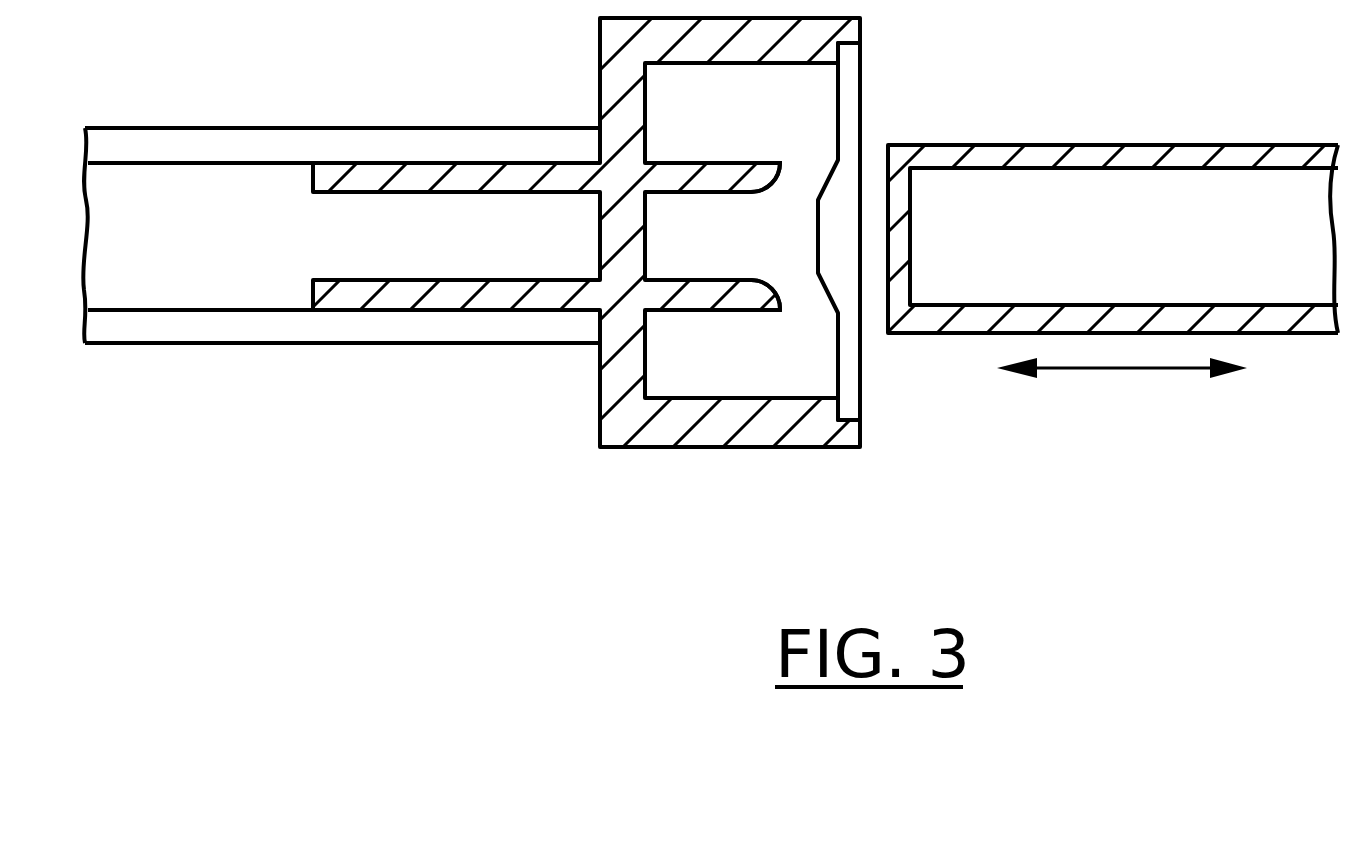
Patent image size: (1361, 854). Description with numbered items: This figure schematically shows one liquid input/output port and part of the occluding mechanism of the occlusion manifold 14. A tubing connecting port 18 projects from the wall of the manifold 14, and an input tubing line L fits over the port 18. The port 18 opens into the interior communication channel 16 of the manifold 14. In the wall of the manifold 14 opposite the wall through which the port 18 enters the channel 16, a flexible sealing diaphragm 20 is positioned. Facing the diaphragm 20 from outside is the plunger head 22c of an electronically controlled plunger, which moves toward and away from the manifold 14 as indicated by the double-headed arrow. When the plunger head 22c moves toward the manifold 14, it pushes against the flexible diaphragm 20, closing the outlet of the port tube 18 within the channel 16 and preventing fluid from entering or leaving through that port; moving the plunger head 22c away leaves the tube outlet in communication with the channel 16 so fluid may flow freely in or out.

The occlusion manifold 14 is at (598, 403).
The interior communication channel 16 is at (783, 368).
The tubing connecting port 18 is at (412, 165).
The flexible sealing diaphragm 20 is at (860, 366).
The plunger head 22c is at (1290, 144).
The input tubing line L is at (208, 127).